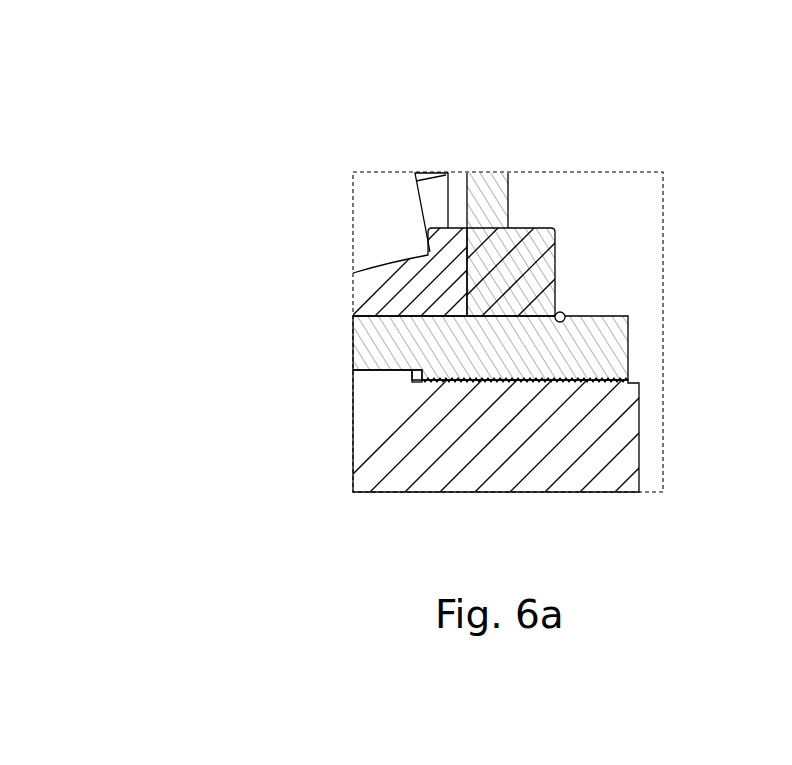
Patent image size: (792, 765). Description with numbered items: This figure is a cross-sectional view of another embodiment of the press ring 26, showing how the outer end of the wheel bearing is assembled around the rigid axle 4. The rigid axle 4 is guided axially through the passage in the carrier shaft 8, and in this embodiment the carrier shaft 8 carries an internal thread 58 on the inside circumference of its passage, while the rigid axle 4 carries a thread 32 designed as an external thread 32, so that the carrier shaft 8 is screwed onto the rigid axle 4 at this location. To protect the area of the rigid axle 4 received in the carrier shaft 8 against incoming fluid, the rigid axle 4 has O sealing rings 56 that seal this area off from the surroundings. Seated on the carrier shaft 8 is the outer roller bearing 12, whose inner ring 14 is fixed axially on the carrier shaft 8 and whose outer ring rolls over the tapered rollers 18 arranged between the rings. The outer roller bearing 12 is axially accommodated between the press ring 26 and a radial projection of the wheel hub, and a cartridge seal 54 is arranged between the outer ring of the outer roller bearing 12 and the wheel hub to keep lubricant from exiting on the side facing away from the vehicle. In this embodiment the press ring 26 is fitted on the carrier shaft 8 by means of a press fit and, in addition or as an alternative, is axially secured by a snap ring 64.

The rigid axle 4 is at (393, 428).
The carrier shaft 8 is at (392, 350).
The outer roller bearing 12 is at (291, 163).
The inner ring 14 is at (392, 287).
The tapered rollers 18 is at (379, 220).
The press ring 26 is at (526, 230).
The external thread 32 is at (568, 383).
The cartridge seal 54 is at (487, 190).
The O sealing rings 56 is at (422, 383).
The internal thread 58 is at (493, 383).
The snap ring 64 is at (564, 312).